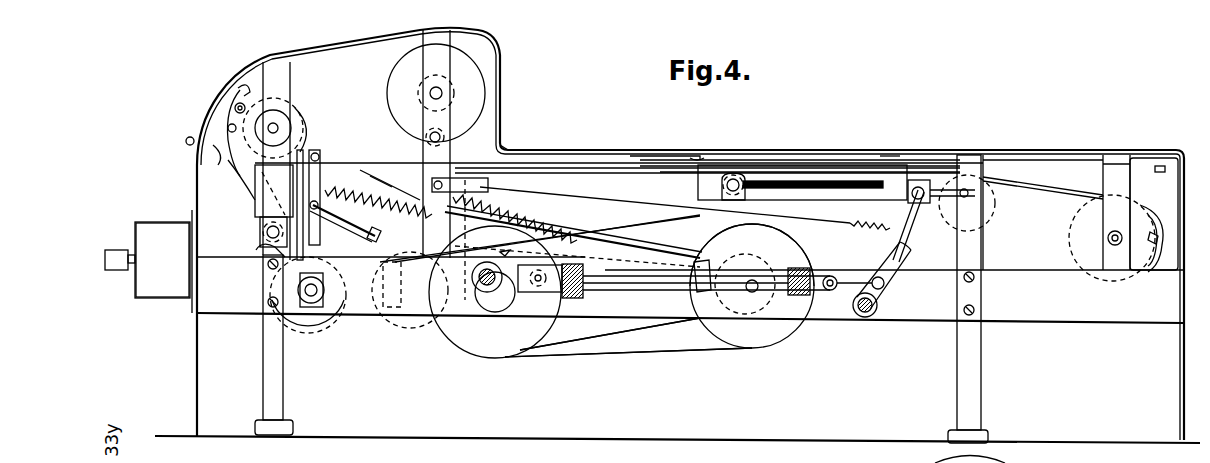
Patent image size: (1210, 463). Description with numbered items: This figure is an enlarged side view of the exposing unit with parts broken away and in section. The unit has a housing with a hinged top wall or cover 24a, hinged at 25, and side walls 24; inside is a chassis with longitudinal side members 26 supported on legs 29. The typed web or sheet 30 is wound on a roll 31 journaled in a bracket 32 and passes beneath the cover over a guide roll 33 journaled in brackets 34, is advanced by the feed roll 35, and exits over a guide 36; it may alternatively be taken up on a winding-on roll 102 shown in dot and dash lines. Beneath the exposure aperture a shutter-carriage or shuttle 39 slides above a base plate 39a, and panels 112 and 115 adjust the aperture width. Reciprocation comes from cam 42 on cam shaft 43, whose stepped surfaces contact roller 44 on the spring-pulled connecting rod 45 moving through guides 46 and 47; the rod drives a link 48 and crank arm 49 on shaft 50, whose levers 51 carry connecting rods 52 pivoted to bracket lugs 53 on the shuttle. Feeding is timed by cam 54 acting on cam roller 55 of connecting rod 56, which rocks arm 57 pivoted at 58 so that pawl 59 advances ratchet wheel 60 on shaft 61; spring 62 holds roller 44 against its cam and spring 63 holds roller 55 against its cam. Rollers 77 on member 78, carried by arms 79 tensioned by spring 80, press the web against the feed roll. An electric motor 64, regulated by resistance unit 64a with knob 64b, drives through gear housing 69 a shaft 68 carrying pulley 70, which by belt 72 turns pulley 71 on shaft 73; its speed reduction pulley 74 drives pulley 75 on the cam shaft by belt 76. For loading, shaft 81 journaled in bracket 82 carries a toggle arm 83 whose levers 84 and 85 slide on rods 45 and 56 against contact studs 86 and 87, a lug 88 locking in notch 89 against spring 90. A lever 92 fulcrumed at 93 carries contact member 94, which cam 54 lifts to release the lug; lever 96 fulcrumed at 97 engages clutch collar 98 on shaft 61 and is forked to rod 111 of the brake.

The housing side walls 24 is at (905, 146).
The top wall or cover 24a is at (776, 160).
The hinge 25 is at (186, 141).
The longitudinal side member 26 is at (1090, 323).
The legs 29 is at (280, 399).
The web or sheet 30 is at (217, 62).
The roll 31 is at (1070, 236).
The bracket 32 is at (1118, 163).
The guide roll 33 is at (994, 210).
The brackets 34 is at (980, 248).
The feed roll 35 is at (285, 108).
The guide 36 is at (238, 90).
The shutter-carriage or shuttle 39 is at (860, 166).
The base plate 39a is at (650, 160).
The cam 42 is at (503, 355).
The cam shaft 43 is at (470, 352).
The roller 44 is at (545, 292).
The connecting rod 45 is at (640, 291).
The guide 46 is at (586, 290).
The guide 47 is at (798, 328).
The link 48 is at (860, 280).
The crank arm 49 is at (885, 300).
The shaft 50 is at (866, 318).
The levers 51 is at (900, 251).
The connecting rods 52 is at (812, 181).
The bracket lugs 53 is at (733, 173).
The cam 54 is at (502, 252).
The cam roller 55 is at (428, 340).
The connecting rod 56 is at (340, 200).
The arm 57 is at (318, 165).
The pivot 58 is at (272, 322).
The pawl 59 is at (302, 130).
The ratchet wheel 60 is at (232, 96).
The shaft 61 is at (272, 120).
The spring 62 is at (845, 225).
The spring 63 is at (322, 166).
The electric motor 64 is at (406, 345).
The resistance unit 64a is at (162, 260).
The knob 64b is at (115, 250).
The shaft 68 is at (262, 340).
The gear housing 69 is at (308, 350).
The pulley 70 is at (292, 345).
The pulley 71 is at (756, 345).
The belt 72 is at (660, 340).
The shaft 73 is at (745, 288).
The speed reduction pulley 74 is at (750, 258).
The pulley 75 is at (484, 360).
The belt 76 is at (595, 340).
The rollers 77 is at (233, 108).
The member 78 is at (222, 118).
The arms 79 is at (232, 166).
The spring 80 is at (258, 238).
The shaft 81 is at (432, 262).
The bracket 82 is at (445, 60).
The arm or toggle member 83 is at (375, 215).
The lever 84 is at (664, 283).
The lever 85 is at (376, 342).
The contact pin or stud 86 is at (727, 346).
The contact pin or stud 87 is at (360, 231).
The locking projection or lug 88 is at (370, 176).
The notch 89 is at (452, 162).
The spring 90 is at (535, 154).
The lever 92 is at (290, 272).
The fulcrum 93 is at (386, 282).
The contact member 94 is at (505, 256).
The lever 96 is at (278, 192).
The fulcrum 97 is at (252, 181).
The clutch collar 98 is at (215, 151).
The winding-on roll 102 is at (473, 78).
The rod 111 is at (256, 250).
The panel 112 is at (897, 158).
The panel 115 is at (697, 158).